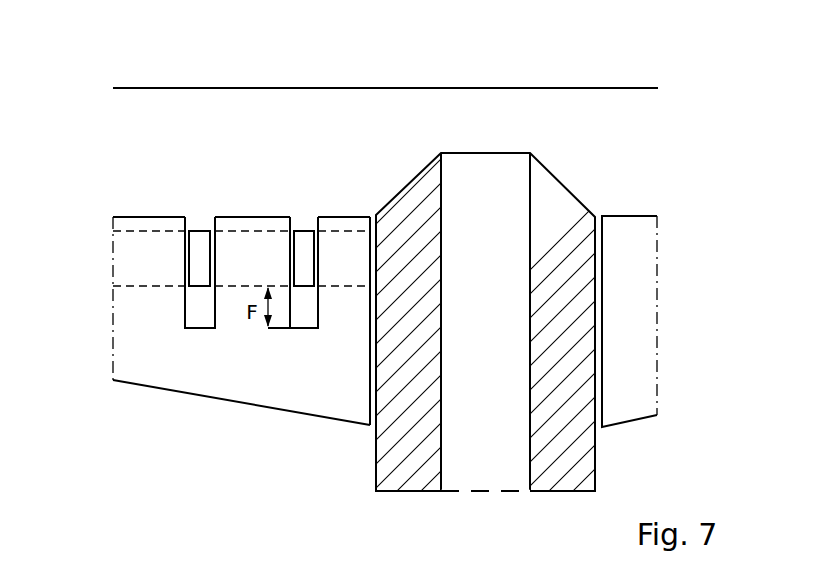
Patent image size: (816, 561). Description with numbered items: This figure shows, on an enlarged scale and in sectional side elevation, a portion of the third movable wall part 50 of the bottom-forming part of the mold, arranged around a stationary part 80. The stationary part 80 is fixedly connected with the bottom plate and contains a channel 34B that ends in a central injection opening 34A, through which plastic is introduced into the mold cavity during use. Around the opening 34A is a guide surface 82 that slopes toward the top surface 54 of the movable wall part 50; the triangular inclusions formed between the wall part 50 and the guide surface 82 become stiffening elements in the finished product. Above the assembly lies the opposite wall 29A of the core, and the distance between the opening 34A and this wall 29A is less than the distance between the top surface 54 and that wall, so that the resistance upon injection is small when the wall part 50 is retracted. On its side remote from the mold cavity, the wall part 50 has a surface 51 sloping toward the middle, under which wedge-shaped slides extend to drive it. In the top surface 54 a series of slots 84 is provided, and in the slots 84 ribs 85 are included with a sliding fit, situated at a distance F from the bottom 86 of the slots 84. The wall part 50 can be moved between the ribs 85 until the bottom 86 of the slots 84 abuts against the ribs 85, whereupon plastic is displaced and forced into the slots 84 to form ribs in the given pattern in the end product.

The opposite wall of the core 29A is at (345, 88).
The injection opening 34A is at (488, 181).
The channel 34B is at (510, 278).
The third movable wall part 50 is at (266, 380).
The sloping surface 51 is at (204, 402).
The top surface 54 is at (255, 215).
The stationary part 80 is at (417, 211).
The guide surface 82 is at (566, 177).
The slot 84 is at (199, 215).
The rib 85 is at (200, 253).
The bottom of the slot 86 is at (200, 333).